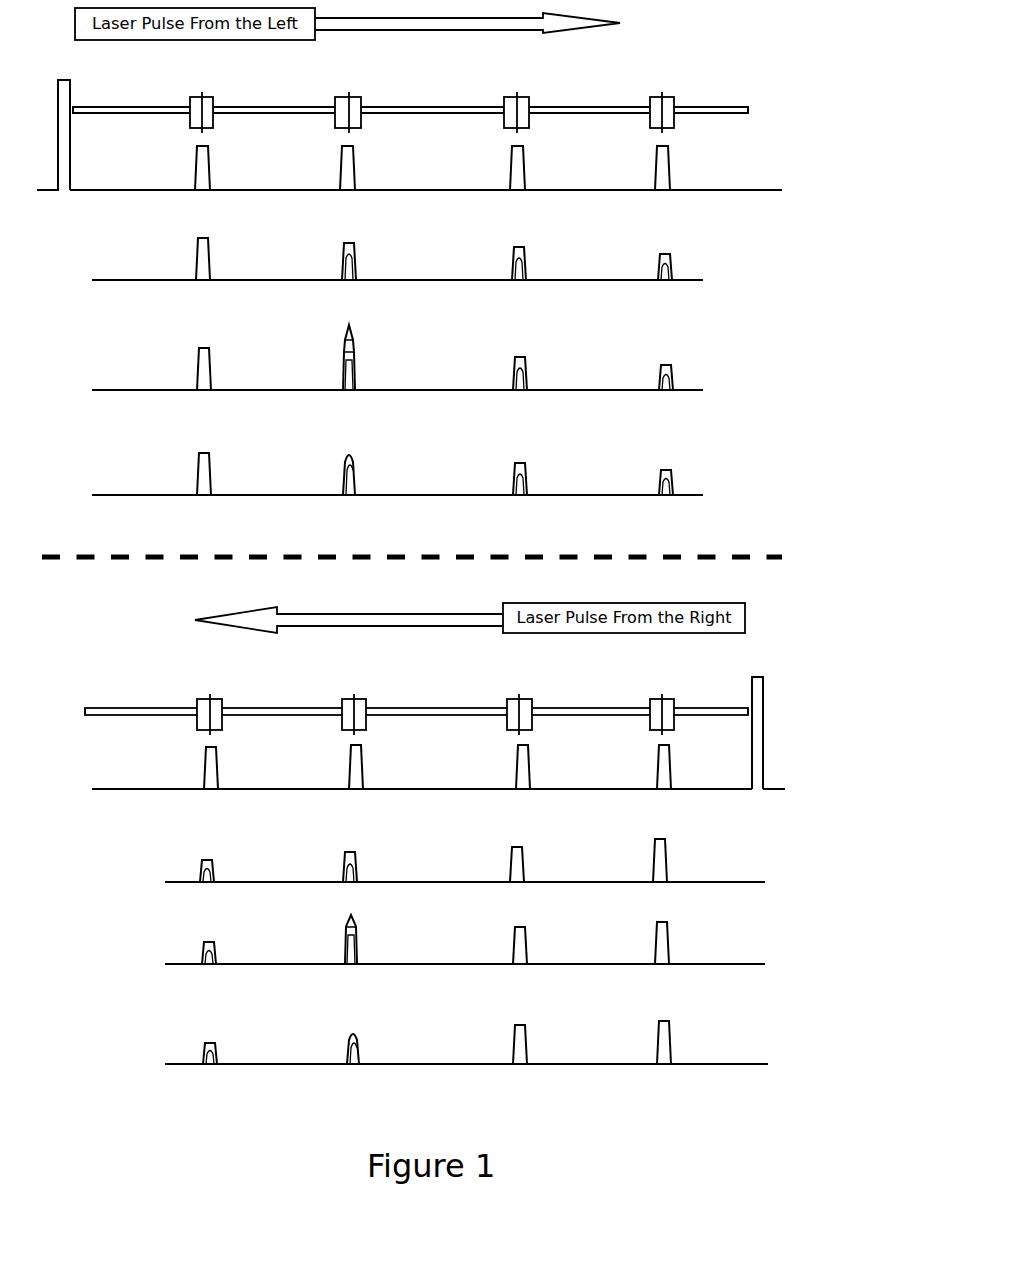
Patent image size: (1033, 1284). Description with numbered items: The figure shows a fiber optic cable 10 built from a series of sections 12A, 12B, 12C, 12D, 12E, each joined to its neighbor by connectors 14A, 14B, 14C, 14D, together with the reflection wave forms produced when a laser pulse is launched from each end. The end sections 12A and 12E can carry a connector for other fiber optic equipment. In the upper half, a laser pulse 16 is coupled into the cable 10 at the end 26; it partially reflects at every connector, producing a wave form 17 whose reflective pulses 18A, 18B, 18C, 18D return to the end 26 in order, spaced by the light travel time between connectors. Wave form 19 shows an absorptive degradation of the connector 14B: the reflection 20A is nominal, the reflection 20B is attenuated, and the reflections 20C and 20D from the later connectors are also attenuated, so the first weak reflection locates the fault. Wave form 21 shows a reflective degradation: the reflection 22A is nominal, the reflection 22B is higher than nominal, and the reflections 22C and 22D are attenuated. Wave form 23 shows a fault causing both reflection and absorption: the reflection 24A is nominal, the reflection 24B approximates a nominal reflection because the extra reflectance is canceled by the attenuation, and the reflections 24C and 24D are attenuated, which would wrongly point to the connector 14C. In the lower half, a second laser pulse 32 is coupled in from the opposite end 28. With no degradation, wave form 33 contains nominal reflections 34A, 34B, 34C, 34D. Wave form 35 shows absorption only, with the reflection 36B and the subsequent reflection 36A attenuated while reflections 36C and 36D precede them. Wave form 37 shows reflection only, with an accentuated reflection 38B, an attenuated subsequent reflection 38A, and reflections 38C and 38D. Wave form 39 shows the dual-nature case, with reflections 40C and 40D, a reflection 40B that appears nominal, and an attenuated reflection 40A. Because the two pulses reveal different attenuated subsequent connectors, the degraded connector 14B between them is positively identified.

The fiber optic cable 10 is at (768, 105).
The end section 12A is at (102, 107).
The section 12B is at (252, 107).
The section 12C is at (403, 107).
The section 12D is at (552, 107).
The end section 12E is at (701, 107).
The connector 14A is at (190, 99).
The connector 14B is at (335, 99).
The connector 14C is at (504, 99).
The connector 14D is at (650, 99).
The laser pulse 16 is at (58, 138).
The wave form 17 is at (768, 172).
The reflective pulse 18A is at (211, 162).
The reflective pulse 18B is at (356, 162).
The reflective pulse 18C is at (526, 162).
The reflective pulse 18D is at (671, 163).
The wave form 19 is at (762, 283).
The reflection 20A is at (211, 258).
The reflection 20B is at (357, 256).
The reflection 20C is at (527, 256).
The reflection 20D is at (673, 256).
The wave form 21 is at (762, 368).
The reflection 22A is at (212, 366).
The reflection 22B is at (356, 365).
The reflection 22C is at (528, 360).
The reflection 22D is at (674, 371).
The wave form 23 is at (762, 467).
The reflection 24A is at (212, 471).
The reflection 24B is at (356, 474).
The reflection 24C is at (528, 472).
The reflection 24D is at (674, 481).
The end 26 is at (74, 114).
The end 28 is at (750, 706).
The laser pulse 32 is at (763, 687).
The wave form 33 is at (793, 772).
The nominal reflection 34A is at (219, 767).
The nominal reflection 34B is at (364, 758).
The nominal reflection 34C is at (531, 767).
The nominal reflection 34D is at (672, 756).
The wave form 35 is at (770, 853).
The reflection 36A is at (215, 867).
The reflection 36B is at (358, 866).
The reflection 36C is at (525, 866).
The reflection 36D is at (668, 853).
The wave form 37 is at (770, 938).
The reflection 38A is at (217, 948).
The accentuated reflection 38B is at (358, 950).
The reflection 38C is at (528, 947).
The reflection 38D is at (670, 942).
The wave form 39 is at (770, 1038).
The reflection 40A is at (218, 1050).
The reflection 40B is at (360, 1052).
The reflection 40C is at (528, 1049).
The reflection 40D is at (672, 1049).